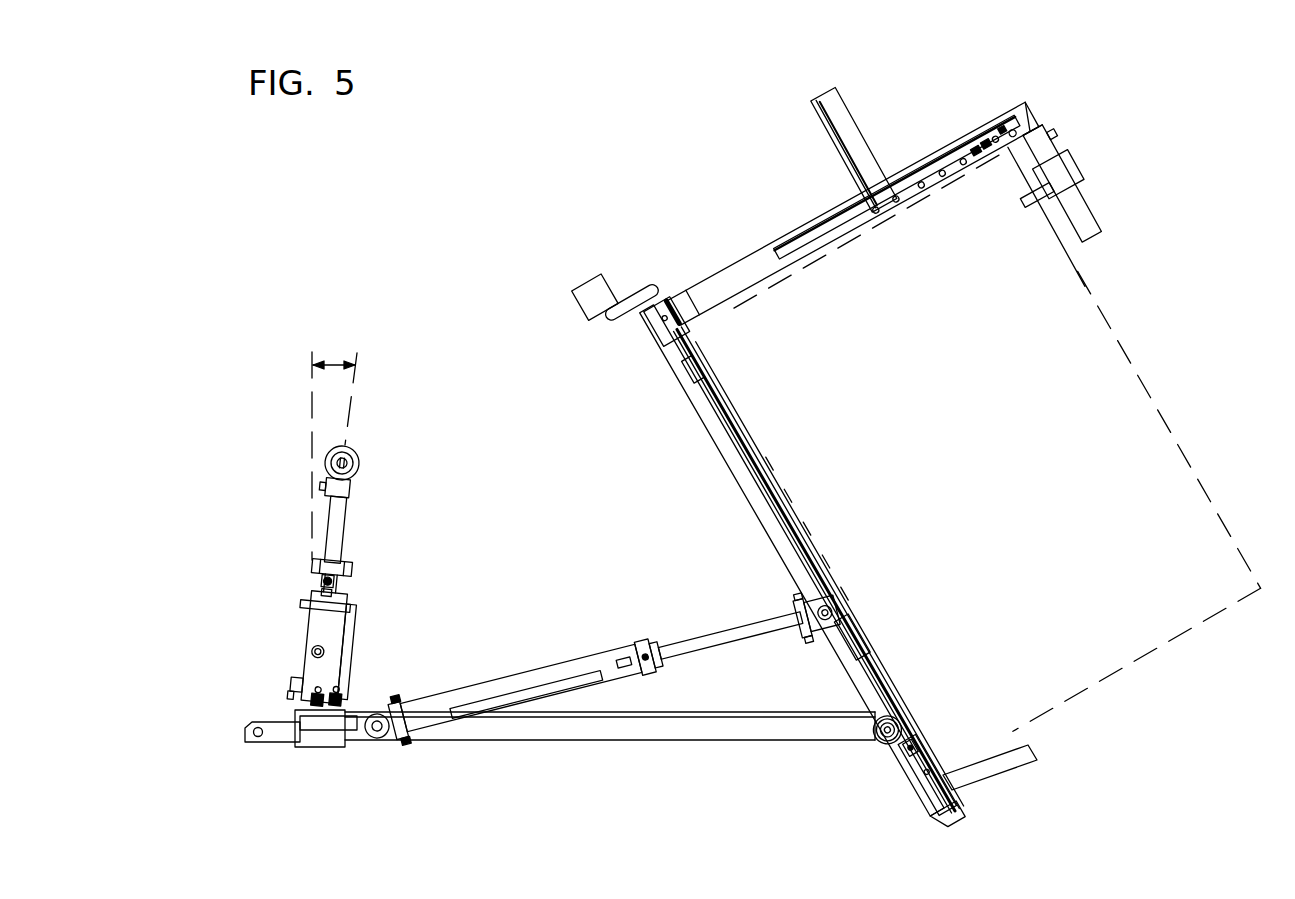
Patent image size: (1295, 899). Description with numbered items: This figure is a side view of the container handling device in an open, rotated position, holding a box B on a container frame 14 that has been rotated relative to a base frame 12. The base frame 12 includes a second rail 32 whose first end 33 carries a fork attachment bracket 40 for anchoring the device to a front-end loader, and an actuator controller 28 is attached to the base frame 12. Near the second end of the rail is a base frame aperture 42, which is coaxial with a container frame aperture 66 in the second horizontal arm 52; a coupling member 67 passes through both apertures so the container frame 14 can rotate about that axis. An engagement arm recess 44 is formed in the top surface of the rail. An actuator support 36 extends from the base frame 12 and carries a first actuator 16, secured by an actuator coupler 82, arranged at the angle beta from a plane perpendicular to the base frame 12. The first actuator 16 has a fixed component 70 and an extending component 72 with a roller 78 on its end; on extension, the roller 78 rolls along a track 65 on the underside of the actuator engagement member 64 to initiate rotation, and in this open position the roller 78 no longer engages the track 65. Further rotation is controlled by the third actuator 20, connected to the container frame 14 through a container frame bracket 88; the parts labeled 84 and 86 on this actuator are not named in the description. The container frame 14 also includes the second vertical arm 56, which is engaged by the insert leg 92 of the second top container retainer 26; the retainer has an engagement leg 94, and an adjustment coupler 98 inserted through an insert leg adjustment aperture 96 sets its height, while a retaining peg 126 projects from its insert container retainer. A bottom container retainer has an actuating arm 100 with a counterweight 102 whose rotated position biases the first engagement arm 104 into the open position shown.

The base frame 12 is at (557, 776).
The container frame 14 is at (715, 260).
The first actuator 16 is at (344, 530).
The third actuator 20 is at (600, 666).
The second top container retainer 26 is at (1040, 92).
The actuator controller 28 is at (348, 698).
The second rail 32 is at (517, 736).
The first end 33 is at (328, 742).
The actuator support 36 is at (349, 633).
The fork attachment bracket 40 is at (268, 743).
The base frame aperture 42 is at (880, 738).
The engagement arm recess 44 is at (965, 808).
The second horizontal arm 52 is at (930, 811).
The second vertical arm 56 is at (740, 262).
The actuator engagement member 64 is at (842, 100).
The track 65 is at (815, 94).
The container frame aperture 66 is at (890, 718).
The coupling member 67 is at (886, 734).
The first actuator fixed component 70 is at (337, 596).
The first actuator extending component 72 is at (342, 533).
The roller 78 is at (360, 457).
The actuator coupler 82 is at (297, 687).
The cylinder body 84 is at (468, 683).
The piston rod 86 is at (713, 638).
The container frame bracket 88 is at (812, 632).
The insert leg 92 is at (1007, 115).
The engagement leg 94 is at (1083, 193).
The insert leg adjustment aperture 96 is at (1002, 110).
The adjustment coupler 98 is at (975, 138).
The actuating arm 100 is at (665, 295).
The counterweight 102 is at (595, 272).
The first engagement arm 104 is at (1022, 771).
The retaining peg 126 is at (1072, 165).
The box B is at (1143, 379).